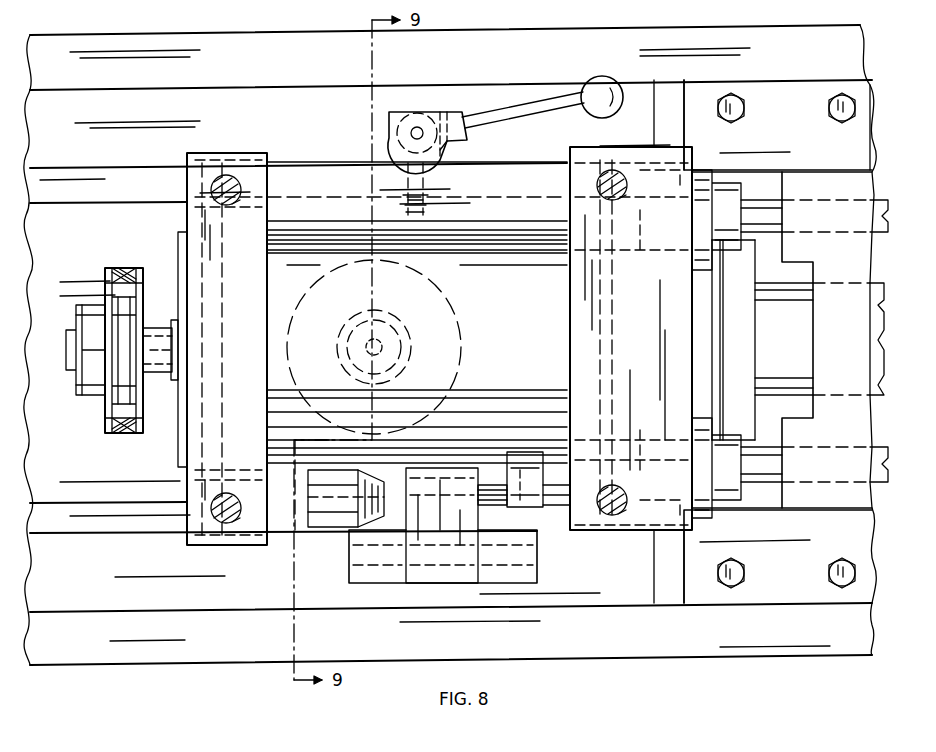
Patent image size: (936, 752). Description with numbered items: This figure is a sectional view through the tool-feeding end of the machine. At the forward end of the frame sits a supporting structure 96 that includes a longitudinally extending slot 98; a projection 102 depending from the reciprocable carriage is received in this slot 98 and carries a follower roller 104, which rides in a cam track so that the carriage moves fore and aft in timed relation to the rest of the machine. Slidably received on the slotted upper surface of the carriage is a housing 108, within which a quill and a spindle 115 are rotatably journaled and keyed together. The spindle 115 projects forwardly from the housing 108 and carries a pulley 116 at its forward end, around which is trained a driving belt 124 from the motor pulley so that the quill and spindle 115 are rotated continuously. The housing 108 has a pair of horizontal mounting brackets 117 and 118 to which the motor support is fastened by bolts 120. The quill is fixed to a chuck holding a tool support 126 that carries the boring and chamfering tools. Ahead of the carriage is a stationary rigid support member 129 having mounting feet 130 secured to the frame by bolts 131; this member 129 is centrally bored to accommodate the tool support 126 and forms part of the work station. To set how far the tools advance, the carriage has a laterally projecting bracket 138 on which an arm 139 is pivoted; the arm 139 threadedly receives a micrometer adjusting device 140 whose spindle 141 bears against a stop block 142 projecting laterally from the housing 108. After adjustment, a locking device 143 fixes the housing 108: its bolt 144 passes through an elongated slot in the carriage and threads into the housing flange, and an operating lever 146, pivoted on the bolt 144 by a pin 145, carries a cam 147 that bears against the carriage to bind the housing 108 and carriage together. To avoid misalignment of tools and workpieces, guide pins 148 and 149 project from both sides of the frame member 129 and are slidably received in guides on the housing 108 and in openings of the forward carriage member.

The supporting structure 96 is at (612, 612).
The longitudinally extending slot 98 is at (455, 335).
The projection 102 is at (395, 322).
The follower roller 104 is at (350, 332).
The housing 108 is at (170, 230).
The spindle 115 is at (156, 322).
The pulley 116 is at (112, 408).
The horizontal mounting bracket 117 is at (262, 282).
The horizontal mounting bracket 118 is at (574, 264).
The bolts 120 is at (242, 190).
The driving belt 124 is at (118, 268).
The tool support 126 is at (884, 298).
The rigid support member 129 is at (880, 148).
The mounting feet 130 is at (778, 95).
The bolts 131 is at (826, 112).
The laterally projecting bracket 138 is at (522, 580).
The arm 139 is at (471, 537).
The micrometer adjusting device 140 is at (338, 510).
The spindle 141 is at (492, 484).
The stop block 142 is at (525, 476).
The locking device 143 is at (455, 105).
The bolt 144 is at (420, 182).
The pin 145 is at (417, 128).
The operating lever 146 is at (510, 105).
The cam 147 is at (440, 160).
The guide pin 148 is at (884, 200).
The guide pin 149 is at (884, 450).